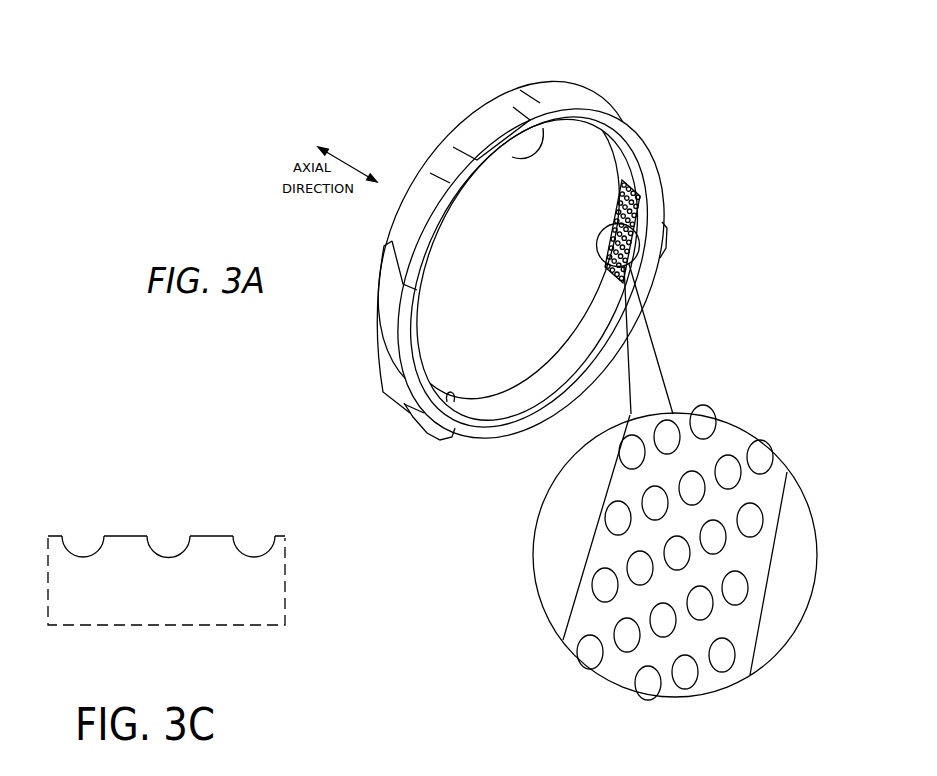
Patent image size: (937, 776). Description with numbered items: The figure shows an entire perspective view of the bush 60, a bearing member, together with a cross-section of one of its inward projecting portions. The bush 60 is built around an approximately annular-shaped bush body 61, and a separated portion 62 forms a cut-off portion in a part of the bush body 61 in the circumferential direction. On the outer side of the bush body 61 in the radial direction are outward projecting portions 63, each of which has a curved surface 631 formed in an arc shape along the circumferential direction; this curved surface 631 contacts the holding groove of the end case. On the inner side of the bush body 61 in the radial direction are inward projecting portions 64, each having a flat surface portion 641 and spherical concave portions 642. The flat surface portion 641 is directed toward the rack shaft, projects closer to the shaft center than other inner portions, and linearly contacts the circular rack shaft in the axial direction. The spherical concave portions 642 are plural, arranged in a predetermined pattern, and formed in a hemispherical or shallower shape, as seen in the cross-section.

In FIG. 3A, the bush 60 is at (360, 114).
In FIG. 3A, the bush body 61 is at (647, 123).
In FIG. 3A, the separated portion 62 is at (390, 277).
In FIG. 3A, the outward projecting portion 63 is at (465, 128).
In FIG. 3A, the curved surface 631 is at (475, 140).
In FIG. 3A, the inward projecting portion 64 is at (543, 128).
In FIG. 3C, the inward projecting portion 64 is at (158, 463).
In FIG. 3A, the flat surface portion 641 is at (735, 440).
In FIG. 3C, the flat surface portion 641 is at (210, 537).
In FIG. 3A, the spherical concave portion 642 is at (750, 517).
In FIG. 3C, the spherical concave portion 642 is at (158, 555).